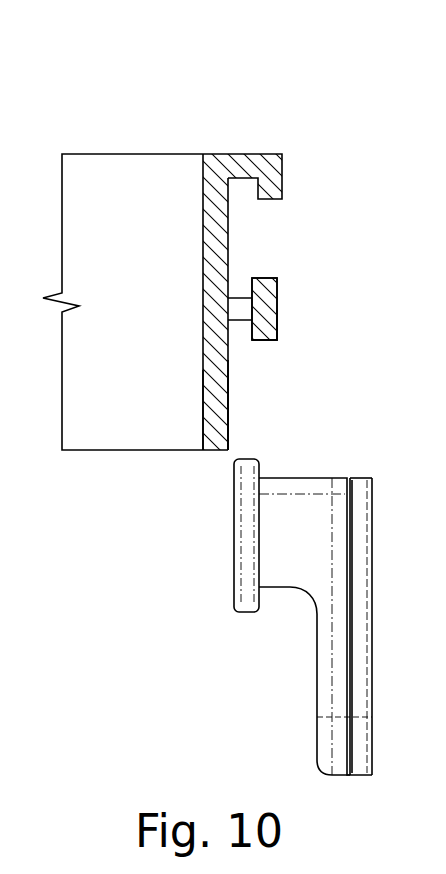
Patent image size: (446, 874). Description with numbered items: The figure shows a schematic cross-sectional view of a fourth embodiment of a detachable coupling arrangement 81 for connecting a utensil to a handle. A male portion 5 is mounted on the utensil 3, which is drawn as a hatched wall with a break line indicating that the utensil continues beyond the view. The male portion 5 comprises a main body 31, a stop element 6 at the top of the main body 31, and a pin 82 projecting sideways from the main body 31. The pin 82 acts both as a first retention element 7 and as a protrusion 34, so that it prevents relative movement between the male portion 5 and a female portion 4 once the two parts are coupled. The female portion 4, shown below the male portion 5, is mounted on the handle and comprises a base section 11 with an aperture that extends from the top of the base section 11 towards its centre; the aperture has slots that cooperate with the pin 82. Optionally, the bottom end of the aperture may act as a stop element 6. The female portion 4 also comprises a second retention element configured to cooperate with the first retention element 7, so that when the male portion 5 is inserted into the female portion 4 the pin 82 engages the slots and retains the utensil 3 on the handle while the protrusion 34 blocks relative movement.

The utensil 3 is at (110, 162).
The male portion 5 is at (220, 246).
The stop element 6 is at (230, 163).
The first retention element 7 is at (291, 287).
The main body 31 is at (211, 388).
The protrusion 34 is at (266, 303).
The pin 82 is at (268, 331).
The detachable coupling arrangement 81 is at (286, 394).
The female portion 4 is at (246, 501).
The base section 11 is at (246, 576).